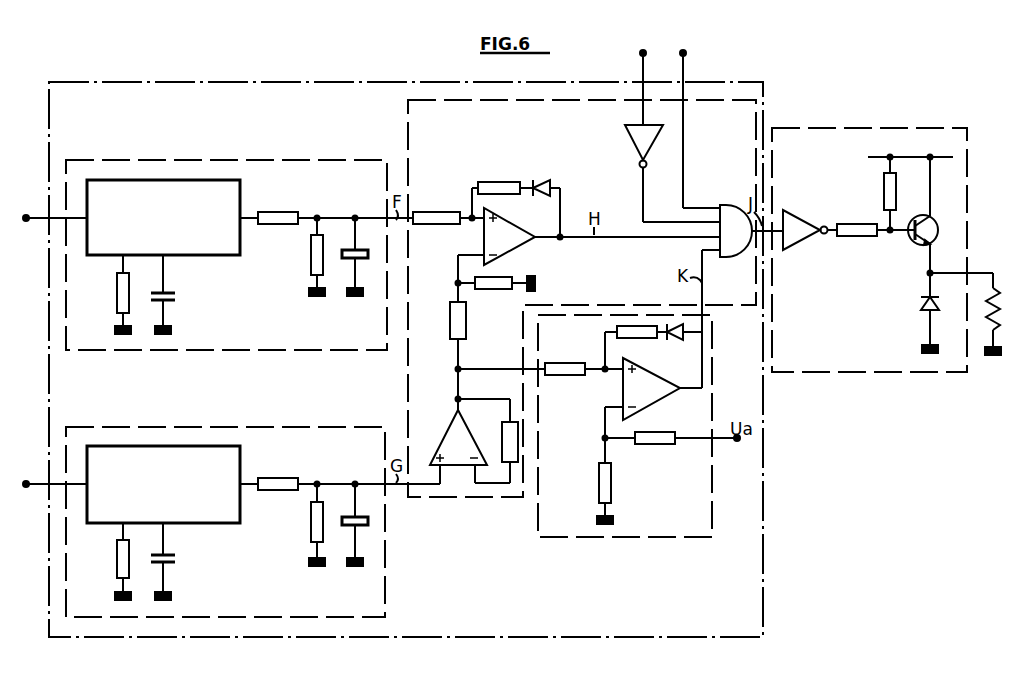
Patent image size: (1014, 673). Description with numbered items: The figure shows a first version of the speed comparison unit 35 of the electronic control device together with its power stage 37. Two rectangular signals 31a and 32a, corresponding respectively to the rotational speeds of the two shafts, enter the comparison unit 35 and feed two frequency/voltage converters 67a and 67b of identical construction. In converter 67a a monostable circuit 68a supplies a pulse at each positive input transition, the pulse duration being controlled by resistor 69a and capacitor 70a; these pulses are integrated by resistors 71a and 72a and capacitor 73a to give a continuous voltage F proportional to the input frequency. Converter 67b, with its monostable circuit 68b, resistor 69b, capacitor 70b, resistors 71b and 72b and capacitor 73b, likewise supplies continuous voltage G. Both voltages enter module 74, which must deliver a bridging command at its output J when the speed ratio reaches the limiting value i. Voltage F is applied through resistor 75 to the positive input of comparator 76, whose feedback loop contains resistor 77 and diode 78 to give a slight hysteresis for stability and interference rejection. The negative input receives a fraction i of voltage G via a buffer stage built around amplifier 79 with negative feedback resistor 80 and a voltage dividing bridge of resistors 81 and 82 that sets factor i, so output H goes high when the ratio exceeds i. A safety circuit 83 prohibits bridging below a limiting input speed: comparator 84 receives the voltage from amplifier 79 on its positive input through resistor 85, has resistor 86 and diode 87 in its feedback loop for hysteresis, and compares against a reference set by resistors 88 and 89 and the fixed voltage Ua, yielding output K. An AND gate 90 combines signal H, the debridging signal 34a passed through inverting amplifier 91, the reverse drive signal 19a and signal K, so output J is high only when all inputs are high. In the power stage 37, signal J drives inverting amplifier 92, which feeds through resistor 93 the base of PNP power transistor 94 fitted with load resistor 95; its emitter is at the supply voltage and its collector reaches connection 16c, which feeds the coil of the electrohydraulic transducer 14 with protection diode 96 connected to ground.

The electrohydraulic transducer 14 is at (991, 313).
The connection 16c is at (968, 273).
The reverse drive signal 19a is at (696, 120).
The rectangular speed signal 31a is at (52, 475).
The rectangular speed signal 32a is at (53, 209).
The timing unit output signal 34a is at (646, 78).
The comparison unit 35 is at (252, 81).
The power stage 37 is at (860, 128).
The frequency/voltage converter 67a is at (130, 160).
The frequency/voltage converter 67b is at (125, 427).
The monostable circuit 68a is at (182, 193).
The monostable circuit 68b is at (179, 460).
The resistor 69a is at (119, 295).
The resistor 69b is at (115, 564).
The capacitor 70a is at (173, 294).
The capacitor 70b is at (173, 563).
The resistor 71a is at (276, 212).
The resistor 71b is at (278, 477).
The resistor 72a is at (309, 257).
The resistor 72b is at (315, 523).
The capacitor 73a is at (358, 230).
The capacitor 73b is at (369, 521).
The module 74 is at (407, 124).
The resistor 75 is at (436, 208).
The comparator 76 is at (512, 236).
The resistor 77 is at (497, 180).
The diode 78 is at (540, 180).
The amplifier 79 is at (455, 435).
The negative feedback resistor 80 is at (505, 441).
The resistor 81 is at (455, 326).
The resistor 82 is at (492, 290).
The safety circuit 83 is at (712, 512).
The comparator 84 is at (654, 403).
The resistor 85 is at (565, 363).
The resistor 86 is at (640, 338).
The diode 87 is at (676, 342).
The resistor 88 is at (600, 488).
The resistor 89 is at (657, 448).
The AND logic gate 90 is at (737, 210).
The inverting amplifier 91 is at (639, 140).
The inverting amplifier 92 is at (794, 221).
The resistor 93 is at (843, 227).
The PNP power transistor 94 is at (910, 248).
The load resistor 95 is at (884, 192).
The protection diode 96 is at (923, 309).